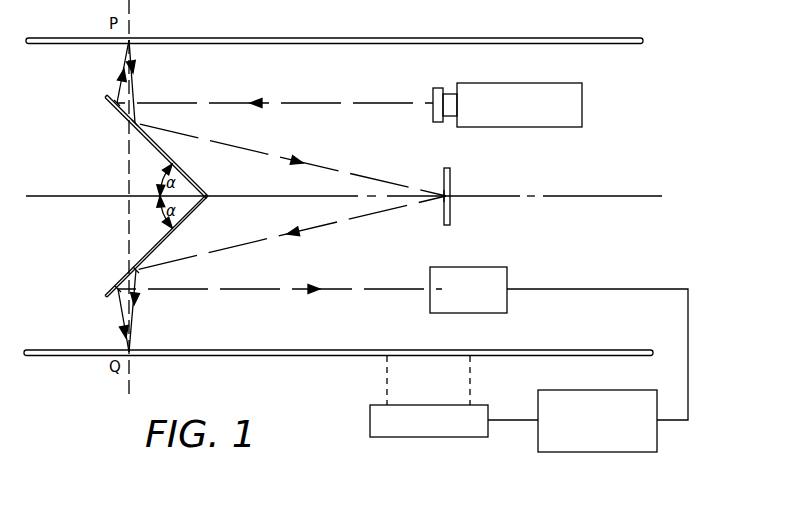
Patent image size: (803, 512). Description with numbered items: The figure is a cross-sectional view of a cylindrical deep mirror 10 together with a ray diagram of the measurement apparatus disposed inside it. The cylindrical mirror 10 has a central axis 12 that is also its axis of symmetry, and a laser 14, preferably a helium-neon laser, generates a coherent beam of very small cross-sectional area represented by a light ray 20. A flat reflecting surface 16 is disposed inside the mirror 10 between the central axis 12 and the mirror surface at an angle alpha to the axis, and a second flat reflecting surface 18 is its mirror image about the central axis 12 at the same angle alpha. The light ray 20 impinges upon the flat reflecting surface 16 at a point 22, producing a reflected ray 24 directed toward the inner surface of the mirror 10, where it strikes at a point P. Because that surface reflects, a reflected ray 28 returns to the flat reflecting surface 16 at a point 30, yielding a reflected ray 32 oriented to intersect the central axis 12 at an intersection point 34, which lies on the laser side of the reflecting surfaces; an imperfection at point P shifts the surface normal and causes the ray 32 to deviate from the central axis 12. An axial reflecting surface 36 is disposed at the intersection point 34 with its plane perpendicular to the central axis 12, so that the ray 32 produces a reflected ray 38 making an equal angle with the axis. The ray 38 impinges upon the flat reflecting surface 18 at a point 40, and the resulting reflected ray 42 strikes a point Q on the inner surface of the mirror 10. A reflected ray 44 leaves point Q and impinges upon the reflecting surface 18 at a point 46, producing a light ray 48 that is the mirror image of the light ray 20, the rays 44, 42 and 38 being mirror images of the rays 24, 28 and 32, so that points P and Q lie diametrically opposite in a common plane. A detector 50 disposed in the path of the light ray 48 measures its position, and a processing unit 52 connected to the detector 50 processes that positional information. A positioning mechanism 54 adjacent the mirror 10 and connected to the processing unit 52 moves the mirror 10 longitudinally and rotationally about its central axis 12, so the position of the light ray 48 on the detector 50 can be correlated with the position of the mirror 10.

The cylindrical deep mirror 10 is at (334, 22).
The central axis 12 is at (562, 192).
The laser 14 is at (583, 92).
The flat reflecting surface 16 is at (195, 171).
The flat reflecting surface 18 is at (199, 212).
The light ray 20 is at (285, 102).
The point 22 is at (112, 112).
The reflected ray 24 is at (115, 72).
The reflected ray 28 is at (137, 68).
The point 30 is at (128, 132).
The reflected ray 32 is at (270, 148).
The intersection point 34 is at (440, 201).
The axial reflecting surface 36 is at (452, 175).
The reflected ray 38 is at (238, 250).
The point 40 is at (133, 268).
The reflected ray 42 is at (135, 318).
The reflected ray 44 is at (123, 322).
The point 46 is at (117, 288).
The light ray 48 is at (285, 287).
The detector 50 is at (507, 268).
The processing unit 52 is at (595, 390).
The positioning mechanism 54 is at (408, 405).